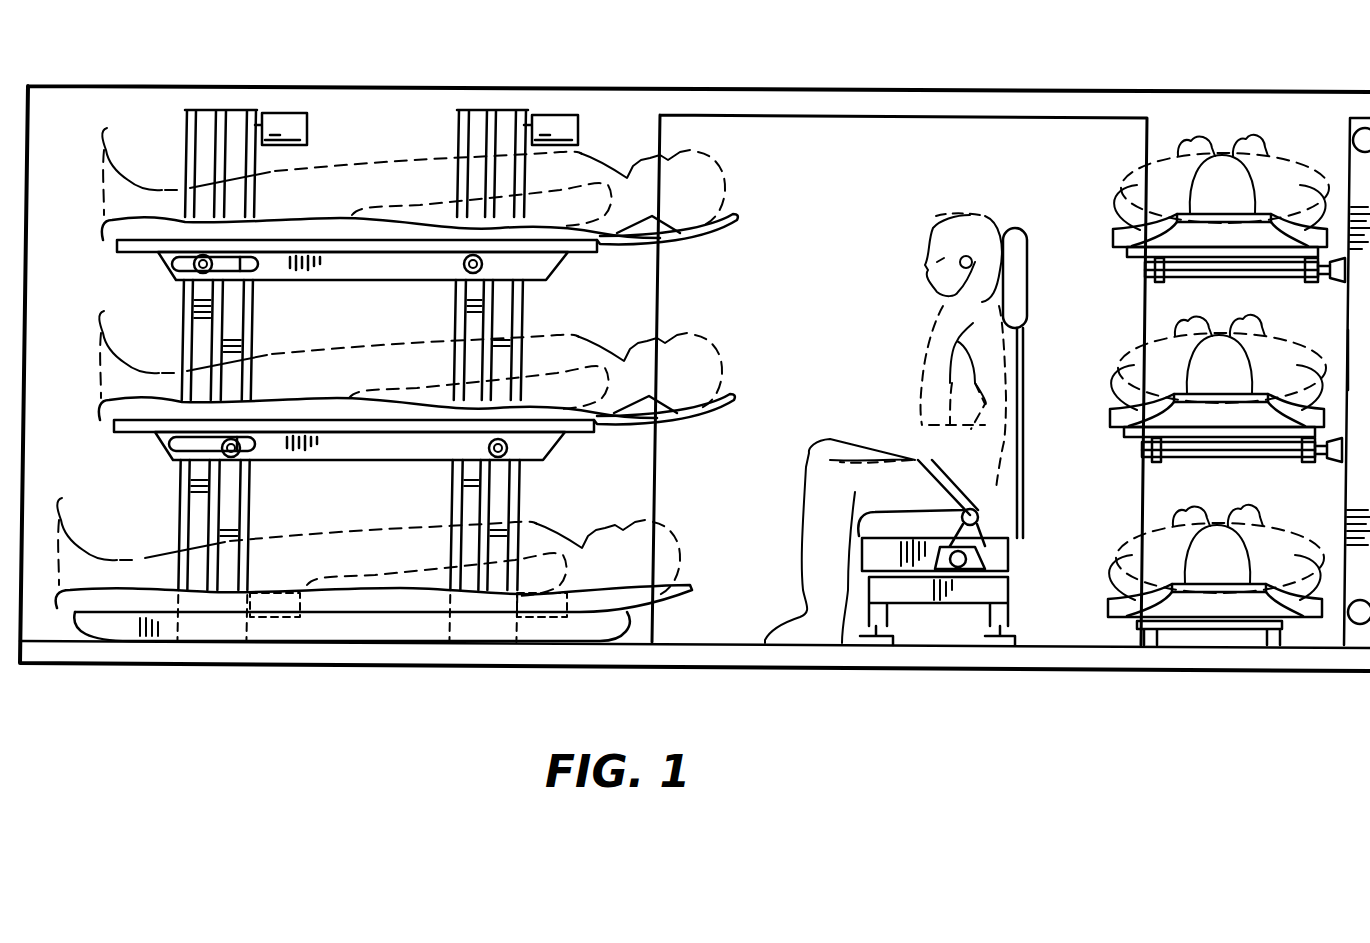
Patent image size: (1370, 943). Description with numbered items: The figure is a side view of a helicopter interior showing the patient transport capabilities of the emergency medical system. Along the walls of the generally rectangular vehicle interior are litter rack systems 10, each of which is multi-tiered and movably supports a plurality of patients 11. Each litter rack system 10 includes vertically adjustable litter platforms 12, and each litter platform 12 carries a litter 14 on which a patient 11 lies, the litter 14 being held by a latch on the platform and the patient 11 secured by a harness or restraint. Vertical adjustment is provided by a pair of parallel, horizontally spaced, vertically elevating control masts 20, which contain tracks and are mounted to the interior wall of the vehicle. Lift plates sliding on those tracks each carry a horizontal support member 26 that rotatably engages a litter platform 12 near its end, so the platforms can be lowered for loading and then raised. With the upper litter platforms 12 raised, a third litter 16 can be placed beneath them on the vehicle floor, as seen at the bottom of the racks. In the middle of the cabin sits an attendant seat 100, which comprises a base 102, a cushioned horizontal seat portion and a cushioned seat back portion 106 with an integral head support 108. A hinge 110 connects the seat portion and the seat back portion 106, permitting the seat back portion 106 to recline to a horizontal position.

The litter rack system 10 is at (478, 108).
The patient 11 is at (720, 167).
The litter platform 12 is at (580, 254).
The litter 14 is at (738, 220).
The third litter 16 is at (600, 630).
The control mast 20 is at (205, 108).
The horizontal support member 26 is at (218, 266).
The attendant seat 100 is at (1018, 228).
The base 102 is at (695, 680).
The seat back portion 106 is at (1030, 398).
The head support 108 is at (1026, 308).
The hinge 110 is at (967, 560).